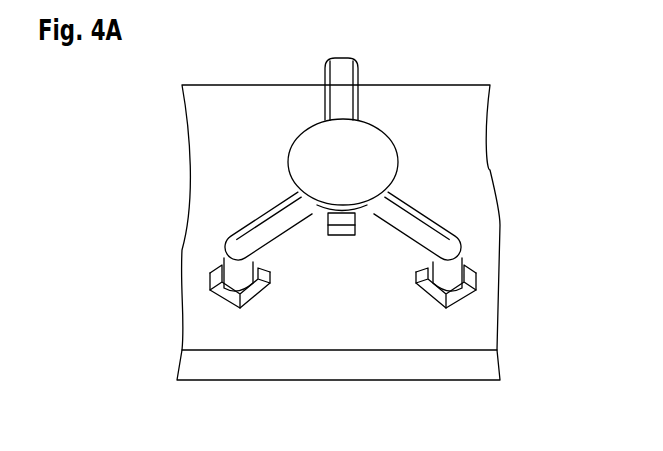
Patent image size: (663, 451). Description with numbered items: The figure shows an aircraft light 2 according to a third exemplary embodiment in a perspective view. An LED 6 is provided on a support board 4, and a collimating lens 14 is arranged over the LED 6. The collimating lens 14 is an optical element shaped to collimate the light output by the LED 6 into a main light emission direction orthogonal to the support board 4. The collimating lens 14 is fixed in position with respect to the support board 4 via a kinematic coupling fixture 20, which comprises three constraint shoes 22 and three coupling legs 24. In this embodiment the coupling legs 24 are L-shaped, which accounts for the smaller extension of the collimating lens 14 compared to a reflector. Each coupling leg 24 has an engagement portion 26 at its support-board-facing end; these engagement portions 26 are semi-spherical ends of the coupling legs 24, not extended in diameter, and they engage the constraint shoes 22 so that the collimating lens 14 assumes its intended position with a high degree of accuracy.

The aircraft light 2 is at (148, 105).
The support board 4 is at (462, 168).
The LED 6 is at (340, 237).
The collimating lens 14 is at (380, 136).
The kinematic coupling fixture 20 is at (184, 230).
The constraint shoes 22 is at (252, 306).
The coupling legs 24 is at (338, 80).
The engagement portions 26 is at (228, 310).